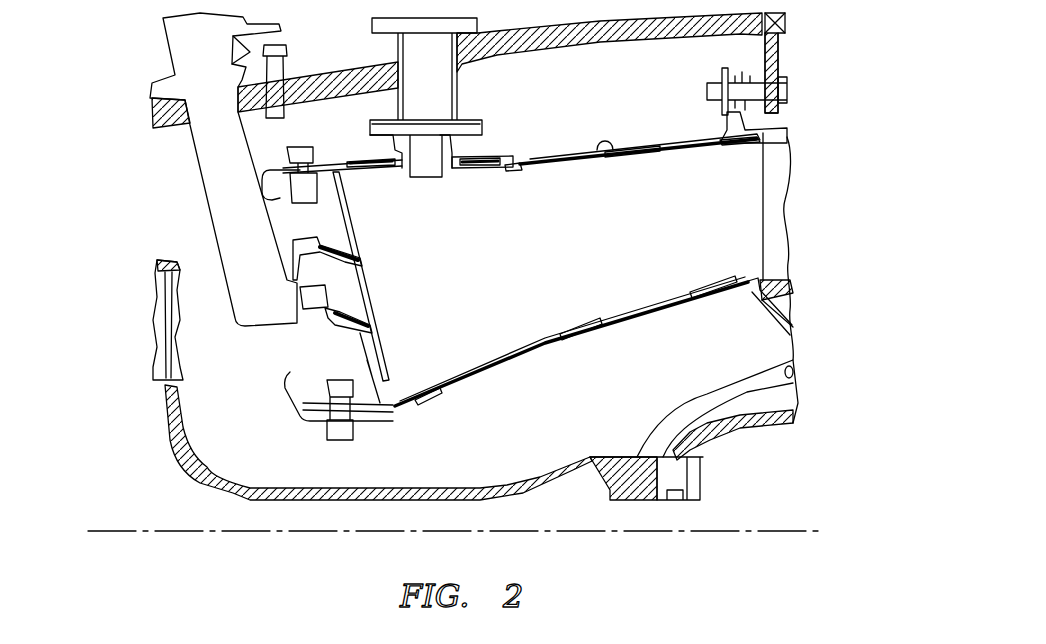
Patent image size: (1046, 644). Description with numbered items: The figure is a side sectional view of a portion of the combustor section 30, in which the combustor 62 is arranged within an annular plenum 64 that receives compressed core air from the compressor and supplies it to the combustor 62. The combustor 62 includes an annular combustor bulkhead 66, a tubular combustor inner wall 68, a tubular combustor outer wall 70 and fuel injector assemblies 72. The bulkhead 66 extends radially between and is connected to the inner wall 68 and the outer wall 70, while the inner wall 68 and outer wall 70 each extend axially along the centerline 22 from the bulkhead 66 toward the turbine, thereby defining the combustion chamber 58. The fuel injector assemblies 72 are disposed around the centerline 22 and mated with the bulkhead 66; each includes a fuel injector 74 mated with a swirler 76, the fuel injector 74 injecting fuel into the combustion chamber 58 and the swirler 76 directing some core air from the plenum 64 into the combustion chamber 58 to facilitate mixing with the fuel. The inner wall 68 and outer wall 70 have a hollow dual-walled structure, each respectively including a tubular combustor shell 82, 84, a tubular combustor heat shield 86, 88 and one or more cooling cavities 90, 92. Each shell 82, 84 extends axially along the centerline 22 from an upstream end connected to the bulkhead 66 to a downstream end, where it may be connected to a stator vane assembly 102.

The centerline 22 is at (803, 527).
The combustor section 30 is at (128, 120).
The combustion chamber 58 is at (560, 267).
The combustor 62 is at (553, 138).
The annular plenum 64 is at (676, 100).
The combustor bulkhead 66 is at (342, 368).
The combustor inner wall 68 is at (493, 380).
The combustor outer wall 70 is at (515, 156).
The fuel injector assembly 72 is at (210, 328).
The fuel injector 74 is at (313, 323).
The swirler 76 is at (360, 266).
The combustor shell 82 is at (658, 322).
The combustor shell 84 is at (600, 150).
The combustor heat shield 86 is at (650, 305).
The combustor heat shield 88 is at (617, 150).
The inner wall cooling cavity 90 is at (697, 285).
The inner wall cooling cavity 92 is at (490, 168).
The stator vane assembly 102 is at (764, 163).